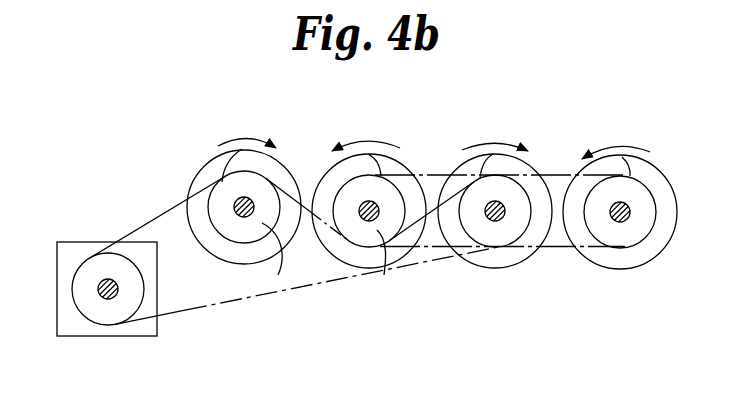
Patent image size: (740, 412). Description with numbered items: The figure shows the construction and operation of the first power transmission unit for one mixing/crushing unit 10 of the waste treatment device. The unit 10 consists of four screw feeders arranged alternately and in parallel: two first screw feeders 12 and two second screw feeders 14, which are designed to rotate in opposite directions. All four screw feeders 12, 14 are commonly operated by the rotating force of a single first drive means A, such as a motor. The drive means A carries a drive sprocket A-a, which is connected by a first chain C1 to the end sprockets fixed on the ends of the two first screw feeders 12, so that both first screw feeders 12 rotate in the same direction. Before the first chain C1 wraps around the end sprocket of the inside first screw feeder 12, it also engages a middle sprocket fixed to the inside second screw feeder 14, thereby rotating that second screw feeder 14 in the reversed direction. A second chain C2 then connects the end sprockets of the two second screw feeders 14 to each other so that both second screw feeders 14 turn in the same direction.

The first screw feeder unit 10 is at (505, 134).
The first screw feeder 12 is at (283, 173).
The second screw feeder 14 is at (358, 163).
The first drive means A is at (80, 328).
The drive sprocket A-a is at (118, 310).
The first chain C1 is at (257, 297).
The second chain C2 is at (560, 247).